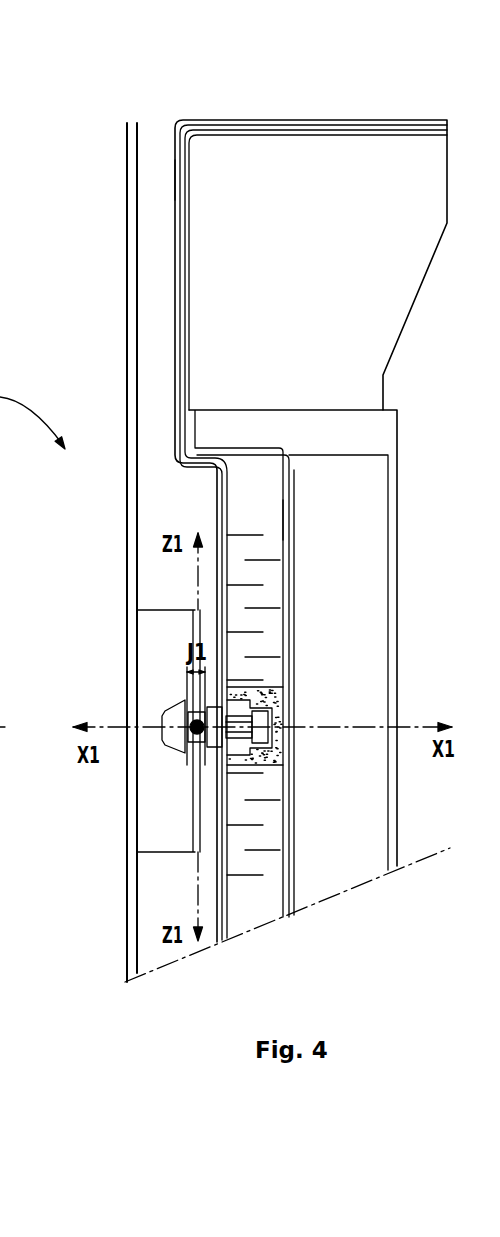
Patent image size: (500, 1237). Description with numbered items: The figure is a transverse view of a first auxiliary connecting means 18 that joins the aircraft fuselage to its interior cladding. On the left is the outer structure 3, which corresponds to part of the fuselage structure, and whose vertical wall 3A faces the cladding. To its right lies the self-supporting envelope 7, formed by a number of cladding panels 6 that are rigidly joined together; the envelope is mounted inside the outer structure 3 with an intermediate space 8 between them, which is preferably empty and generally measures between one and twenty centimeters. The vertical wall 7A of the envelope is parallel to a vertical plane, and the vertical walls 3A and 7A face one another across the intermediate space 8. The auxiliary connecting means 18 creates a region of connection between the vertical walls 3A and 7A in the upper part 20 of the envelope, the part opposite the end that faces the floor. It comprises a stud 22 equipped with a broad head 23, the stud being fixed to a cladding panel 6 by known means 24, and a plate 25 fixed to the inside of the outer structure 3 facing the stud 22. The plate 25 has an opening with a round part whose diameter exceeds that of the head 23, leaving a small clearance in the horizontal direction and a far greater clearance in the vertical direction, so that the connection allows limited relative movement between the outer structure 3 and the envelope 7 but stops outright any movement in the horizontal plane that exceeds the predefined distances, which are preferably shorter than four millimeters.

The outer structure 3 is at (118, 286).
The vertical wall of the outer structure 3A is at (134, 487).
The cladding panel 6 is at (267, 600).
The self-supporting envelope 7 is at (170, 118).
The vertical wall of the self-supporting envelope 7A is at (262, 523).
The intermediate space 8 is at (157, 185).
The auxiliary connecting means 18 is at (115, 678).
The upper part of the self-supporting envelope 20 is at (172, 575).
The stud 22 is at (177, 690).
The head 23 is at (177, 745).
The known means 24 is at (259, 706).
The plate 25 is at (200, 835).